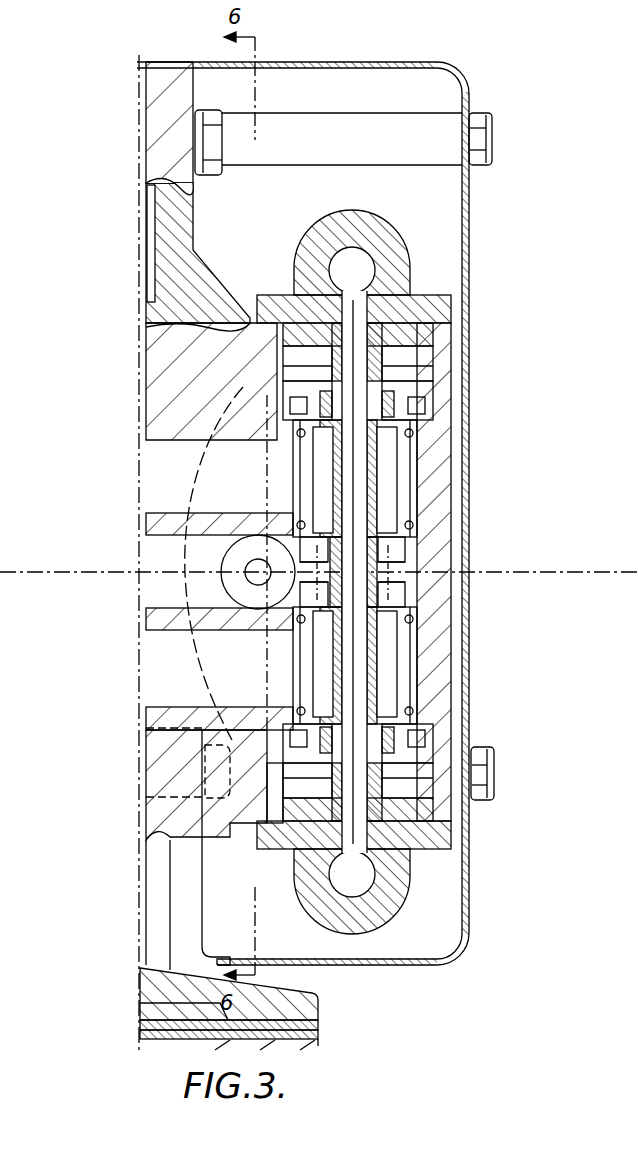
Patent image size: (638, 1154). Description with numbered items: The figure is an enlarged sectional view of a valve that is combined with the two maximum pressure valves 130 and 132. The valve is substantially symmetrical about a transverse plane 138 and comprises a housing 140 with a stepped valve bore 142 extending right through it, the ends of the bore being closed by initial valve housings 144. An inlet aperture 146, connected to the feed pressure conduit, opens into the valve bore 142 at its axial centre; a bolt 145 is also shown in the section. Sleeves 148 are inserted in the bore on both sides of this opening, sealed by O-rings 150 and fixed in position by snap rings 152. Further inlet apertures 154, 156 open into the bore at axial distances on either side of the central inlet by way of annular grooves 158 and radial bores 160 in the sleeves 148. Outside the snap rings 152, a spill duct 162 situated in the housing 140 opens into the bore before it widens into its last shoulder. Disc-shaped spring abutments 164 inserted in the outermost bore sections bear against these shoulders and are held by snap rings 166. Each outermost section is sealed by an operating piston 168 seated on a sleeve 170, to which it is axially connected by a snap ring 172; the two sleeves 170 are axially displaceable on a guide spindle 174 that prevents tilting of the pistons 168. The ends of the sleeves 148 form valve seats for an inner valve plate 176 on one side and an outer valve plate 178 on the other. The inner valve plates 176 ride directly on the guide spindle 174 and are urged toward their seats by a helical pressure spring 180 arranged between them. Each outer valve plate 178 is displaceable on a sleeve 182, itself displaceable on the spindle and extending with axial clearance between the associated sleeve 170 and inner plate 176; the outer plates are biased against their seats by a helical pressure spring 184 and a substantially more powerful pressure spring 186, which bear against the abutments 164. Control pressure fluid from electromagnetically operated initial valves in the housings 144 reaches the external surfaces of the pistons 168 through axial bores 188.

The maximum pressure valve 130 is at (287, 747).
The maximum pressure valve 132 is at (287, 403).
The transverse plane 138 is at (170, 563).
The housing 140 is at (188, 262).
The valve bore 142 is at (451, 562).
The initial valve housing 144 is at (372, 232).
The bolt 145 is at (222, 570).
The inlet aperture 146 is at (160, 603).
The sleeve 148 is at (420, 493).
The O-ring 150 is at (425, 455).
The snap ring 152 is at (430, 434).
The inlet aperture 154 is at (160, 698).
The inlet aperture 156 is at (147, 501).
The annular groove 158 is at (300, 456).
The radial bore 160 is at (305, 492).
The spill duct 162 is at (268, 727).
The spring abutment 164 is at (440, 402).
The snap ring 166 is at (402, 395).
The operating piston 168 is at (442, 312).
The sleeve 170 is at (420, 338).
The snap ring 172 is at (382, 306).
The guide spindle 174 is at (430, 523).
The inner valve plate 176 is at (417, 553).
The outer valve plate 178 is at (435, 414).
The helical pressure spring 180 is at (420, 575).
The sleeve 182 is at (420, 480).
The helical pressure spring 184 is at (495, 762).
The pressure spring 186 is at (400, 368).
The axial bore 188 is at (364, 300).